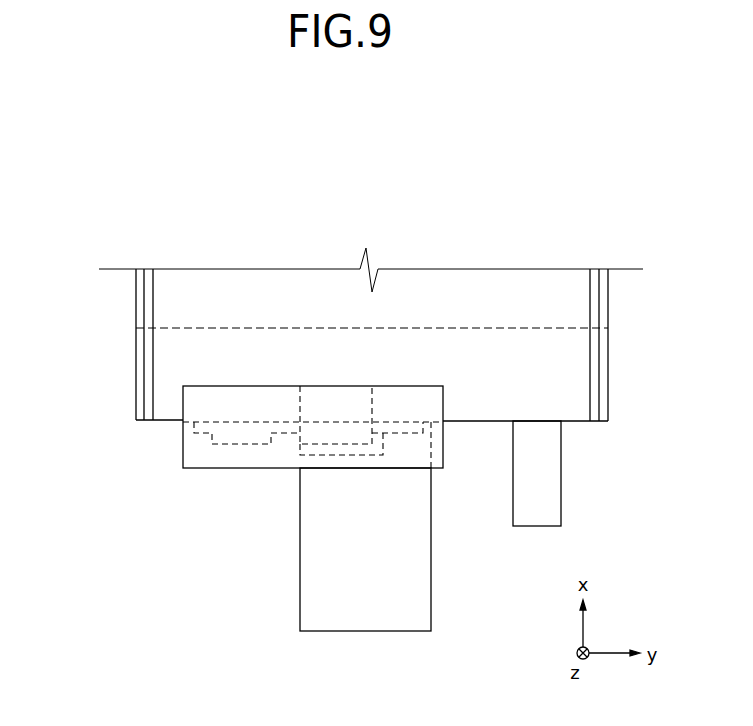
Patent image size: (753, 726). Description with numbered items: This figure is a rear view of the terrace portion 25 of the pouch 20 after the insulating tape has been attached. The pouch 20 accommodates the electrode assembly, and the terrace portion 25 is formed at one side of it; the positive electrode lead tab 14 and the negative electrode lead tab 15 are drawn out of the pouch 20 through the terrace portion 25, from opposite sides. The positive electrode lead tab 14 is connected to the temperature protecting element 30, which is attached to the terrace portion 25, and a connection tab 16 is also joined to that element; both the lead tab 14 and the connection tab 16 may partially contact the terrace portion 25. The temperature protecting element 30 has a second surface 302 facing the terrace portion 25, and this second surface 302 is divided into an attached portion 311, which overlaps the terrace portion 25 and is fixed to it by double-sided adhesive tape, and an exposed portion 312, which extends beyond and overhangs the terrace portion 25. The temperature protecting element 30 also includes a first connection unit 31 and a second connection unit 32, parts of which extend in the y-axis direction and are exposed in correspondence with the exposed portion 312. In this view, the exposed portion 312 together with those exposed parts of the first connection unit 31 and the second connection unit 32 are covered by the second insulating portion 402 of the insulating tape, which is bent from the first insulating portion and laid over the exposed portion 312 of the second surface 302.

The pouch 20 is at (136, 308).
The terrace portion 25 is at (570, 380).
The negative electrode lead tab 15 is at (547, 490).
The connection tab 16 is at (365, 610).
The positive electrode lead tab 14 is at (227, 447).
The first connection unit 31 is at (288, 435).
The second connection unit 32 is at (400, 433).
The temperature protecting element 30 is at (342, 452).
The second surface 302 is at (339, 312).
The attached portion 311 is at (348, 402).
The exposed portion 312 is at (322, 428).
The second insulating portion 402 is at (183, 447).